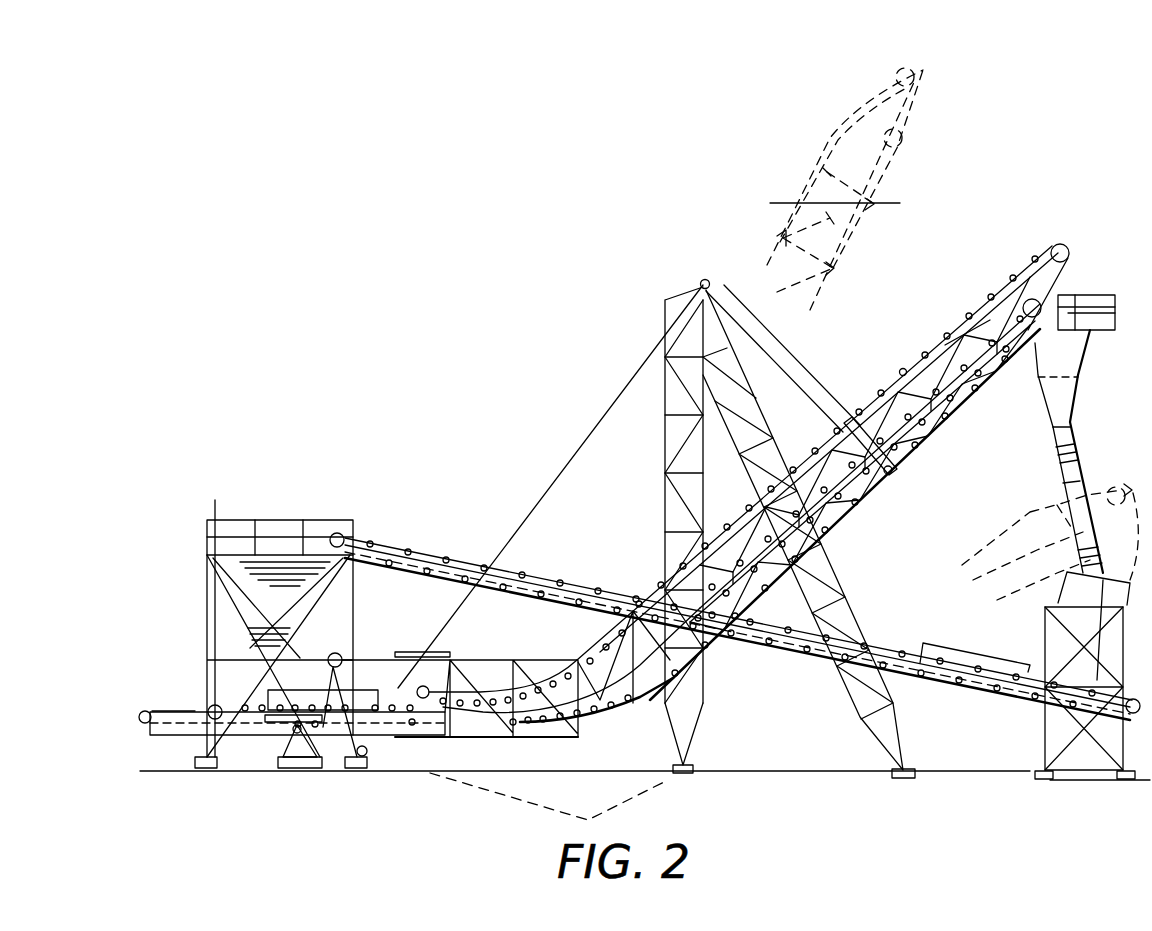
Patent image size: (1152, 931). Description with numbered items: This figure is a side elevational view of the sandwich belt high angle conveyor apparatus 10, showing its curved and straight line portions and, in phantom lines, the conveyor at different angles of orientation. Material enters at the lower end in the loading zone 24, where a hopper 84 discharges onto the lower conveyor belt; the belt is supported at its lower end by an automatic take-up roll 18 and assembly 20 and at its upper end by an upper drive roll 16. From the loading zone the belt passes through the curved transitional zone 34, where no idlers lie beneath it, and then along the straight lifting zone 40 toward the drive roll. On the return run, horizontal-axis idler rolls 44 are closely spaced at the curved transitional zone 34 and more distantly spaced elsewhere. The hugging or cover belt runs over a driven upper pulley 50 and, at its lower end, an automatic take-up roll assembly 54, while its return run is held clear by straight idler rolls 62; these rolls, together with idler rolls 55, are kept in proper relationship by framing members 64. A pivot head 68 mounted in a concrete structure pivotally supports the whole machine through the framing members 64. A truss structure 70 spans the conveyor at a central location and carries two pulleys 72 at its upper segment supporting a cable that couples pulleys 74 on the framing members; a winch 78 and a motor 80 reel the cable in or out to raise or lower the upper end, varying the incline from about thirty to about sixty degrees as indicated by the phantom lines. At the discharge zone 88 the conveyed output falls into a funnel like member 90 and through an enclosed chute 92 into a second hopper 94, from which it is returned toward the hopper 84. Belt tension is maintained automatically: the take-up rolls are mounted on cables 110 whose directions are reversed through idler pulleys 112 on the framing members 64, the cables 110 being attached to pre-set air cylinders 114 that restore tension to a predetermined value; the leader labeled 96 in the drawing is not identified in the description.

The sandwich belt high angle conveyor apparatus 10 is at (431, 478).
The upper drive roll 16 is at (1030, 299).
The automatic take-up roll 18 is at (205, 705).
The take-up assembly 20 is at (128, 744).
The loading zone 24 is at (235, 648).
The curved transitional zone 34 is at (597, 735).
The lifting zone 40 is at (805, 428).
The idler rolls 44 is at (597, 712).
The upper pulley 50 is at (1063, 245).
The automatic take-up roll assembly 54 is at (436, 688).
The idler rolls 55 is at (563, 702).
The idler rolls 62 is at (903, 366).
The framing members 64 is at (970, 326).
The pivot head 68 is at (298, 745).
The truss structure 70 is at (664, 386).
The pulleys 72 is at (705, 278).
The pulleys 74 is at (875, 485).
The winch 78 is at (352, 762).
The motor 80 is at (368, 757).
The hopper 84 is at (232, 590).
The discharge zone 88 is at (1075, 294).
The funnel like member 90 is at (1078, 395).
The enclosed chute 92 is at (1080, 447).
The second hopper 94 is at (1053, 593).
The cable 96 is at (603, 413).
The cables 110 is at (162, 708).
The idler pulleys 112 is at (140, 717).
The air cylinders 114 is at (280, 738).